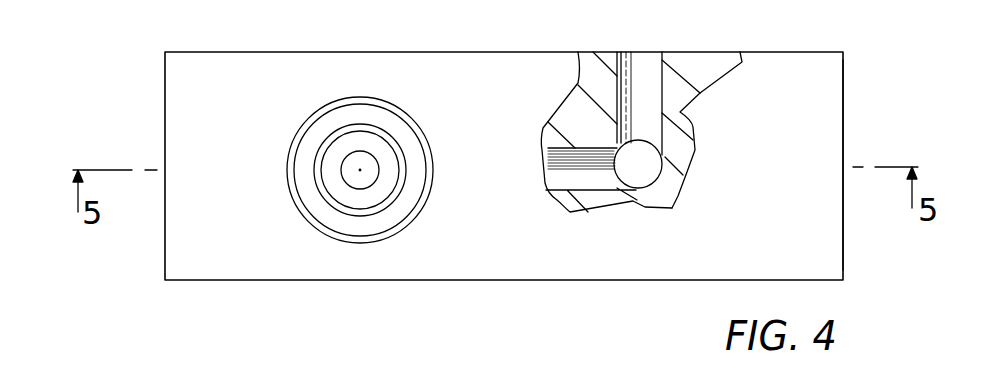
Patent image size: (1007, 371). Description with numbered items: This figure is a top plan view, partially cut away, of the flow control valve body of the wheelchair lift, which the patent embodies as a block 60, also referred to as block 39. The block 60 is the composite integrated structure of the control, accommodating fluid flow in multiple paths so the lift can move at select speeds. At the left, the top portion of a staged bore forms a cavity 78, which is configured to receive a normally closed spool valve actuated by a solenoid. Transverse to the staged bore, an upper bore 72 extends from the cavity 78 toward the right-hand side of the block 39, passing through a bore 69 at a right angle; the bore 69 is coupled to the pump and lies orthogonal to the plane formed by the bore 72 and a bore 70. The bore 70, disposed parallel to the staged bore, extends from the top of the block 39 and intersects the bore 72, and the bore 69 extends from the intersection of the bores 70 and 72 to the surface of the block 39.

The block 60 is at (313, 32).
The block 39 is at (843, 105).
The cavity 78 is at (400, 207).
The bore 69 is at (640, 57).
The upper bore 72 is at (552, 172).
The bore 70 is at (643, 167).